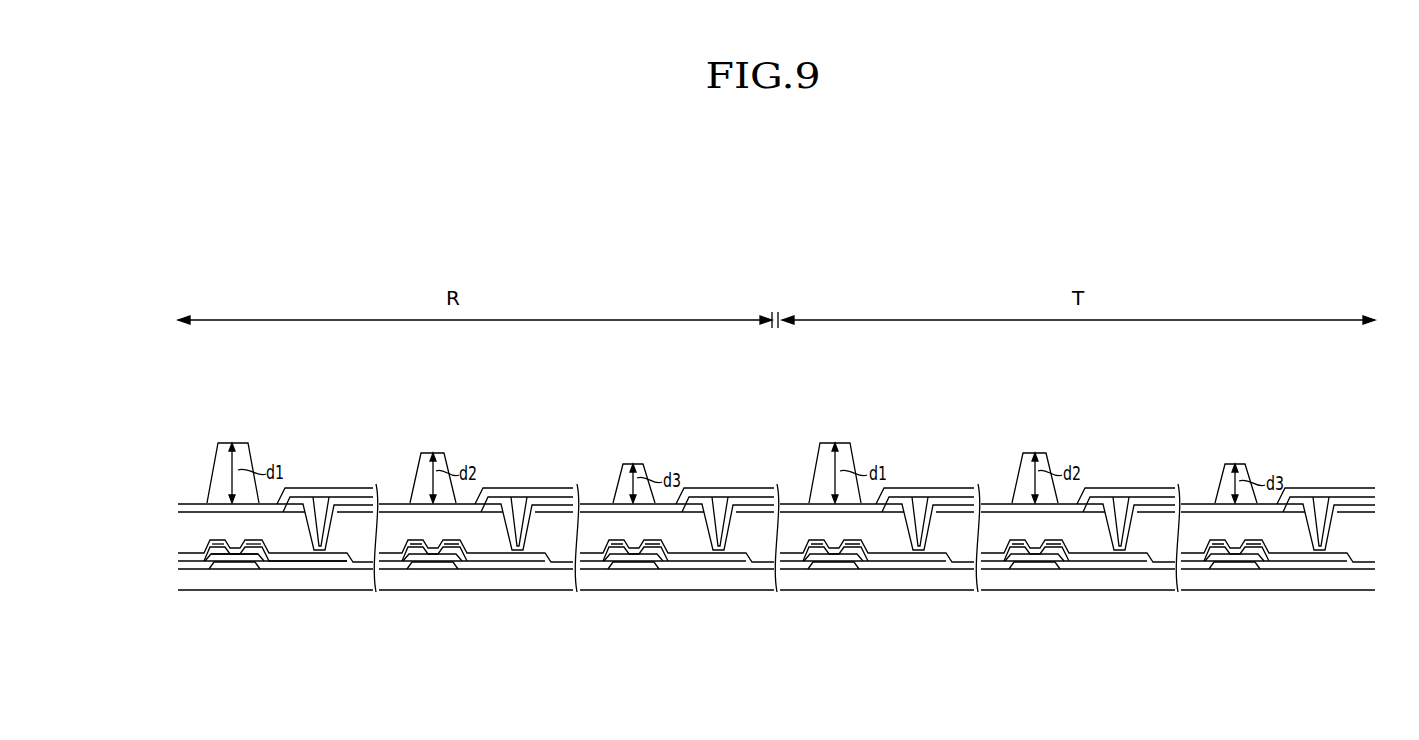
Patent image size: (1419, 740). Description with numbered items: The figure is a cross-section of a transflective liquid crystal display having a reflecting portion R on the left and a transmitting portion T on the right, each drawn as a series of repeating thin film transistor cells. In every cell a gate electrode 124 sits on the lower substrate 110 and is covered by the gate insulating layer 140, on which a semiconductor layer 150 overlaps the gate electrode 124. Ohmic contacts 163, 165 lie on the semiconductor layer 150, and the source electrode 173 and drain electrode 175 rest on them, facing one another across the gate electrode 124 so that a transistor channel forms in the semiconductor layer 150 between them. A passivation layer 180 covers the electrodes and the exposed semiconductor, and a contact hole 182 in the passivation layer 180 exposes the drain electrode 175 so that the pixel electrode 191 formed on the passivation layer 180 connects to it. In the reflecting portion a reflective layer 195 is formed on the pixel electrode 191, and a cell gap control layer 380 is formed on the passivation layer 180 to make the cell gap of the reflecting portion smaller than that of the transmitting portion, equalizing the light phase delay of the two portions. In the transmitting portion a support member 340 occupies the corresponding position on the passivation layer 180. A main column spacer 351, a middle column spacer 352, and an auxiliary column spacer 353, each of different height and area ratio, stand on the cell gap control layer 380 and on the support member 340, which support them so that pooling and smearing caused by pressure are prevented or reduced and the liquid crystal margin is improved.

The lower substrate 110 is at (275, 599).
The gate electrode 124 is at (234, 596).
The gate insulating layer 140 is at (262, 605).
The semiconductor layer 150 is at (232, 605).
The ohmic contact 163 is at (204, 587).
The ohmic contact 165 is at (255, 600).
The source electrode 173 is at (186, 534).
The drain electrode 175 is at (288, 588).
The passivation layer 180 is at (270, 598).
The contact hole 182 is at (329, 577).
The pixel electrode 191 is at (170, 505).
The reflective layer 195 is at (325, 471).
The cell gap control layer 380 is at (268, 486).
The main column spacer 351 is at (210, 468).
The middle column spacer 352 is at (418, 468).
The auxiliary column spacer 353 is at (620, 478).
The support member 340 is at (1026, 502).